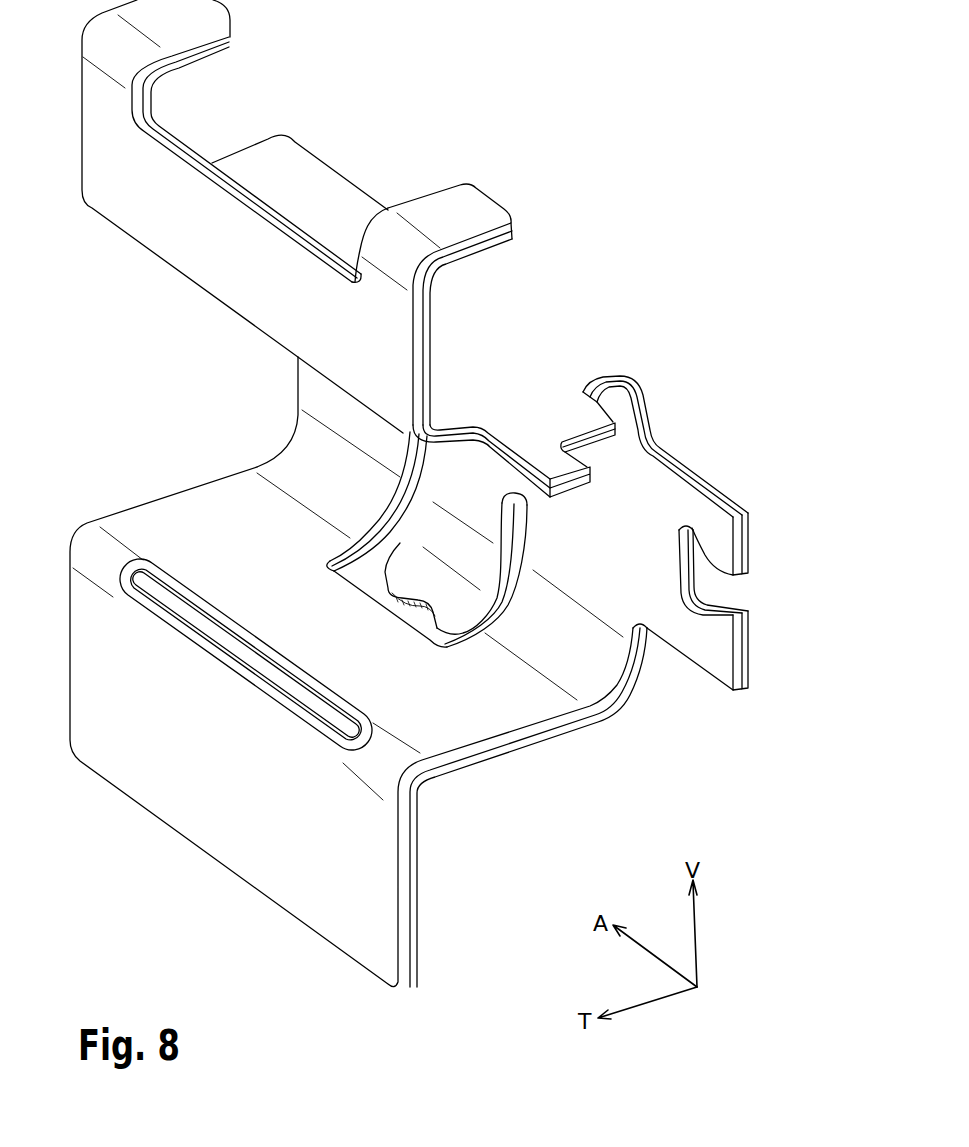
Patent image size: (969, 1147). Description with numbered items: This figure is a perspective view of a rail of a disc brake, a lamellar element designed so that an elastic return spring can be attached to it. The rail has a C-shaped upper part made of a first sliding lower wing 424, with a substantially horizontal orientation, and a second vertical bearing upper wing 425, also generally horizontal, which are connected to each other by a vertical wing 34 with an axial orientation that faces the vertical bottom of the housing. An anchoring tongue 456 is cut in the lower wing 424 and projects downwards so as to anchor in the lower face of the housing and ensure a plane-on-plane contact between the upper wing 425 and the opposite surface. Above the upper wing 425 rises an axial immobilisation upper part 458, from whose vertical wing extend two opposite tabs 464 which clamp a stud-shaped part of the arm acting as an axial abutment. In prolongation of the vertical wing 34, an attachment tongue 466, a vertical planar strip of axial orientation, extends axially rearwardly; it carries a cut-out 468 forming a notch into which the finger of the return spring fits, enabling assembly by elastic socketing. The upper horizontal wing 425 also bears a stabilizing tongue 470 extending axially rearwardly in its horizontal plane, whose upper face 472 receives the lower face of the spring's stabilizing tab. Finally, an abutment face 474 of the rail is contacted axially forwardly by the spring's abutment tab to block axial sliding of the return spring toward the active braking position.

The vertical wing 34 is at (298, 415).
The first sliding lower wing 424 is at (211, 528).
The second vertical bearing upper wing 425 is at (457, 440).
The anchoring tongue 456 is at (438, 573).
The axial immobilisation upper part 458 is at (177, 195).
The tab 464 is at (450, 205).
The attachment tongue 466 is at (720, 553).
The cut-out 468 is at (690, 573).
The stabilizing tongue 470 is at (543, 437).
The upper face 472 is at (567, 438).
The abutment face 474 is at (592, 444).